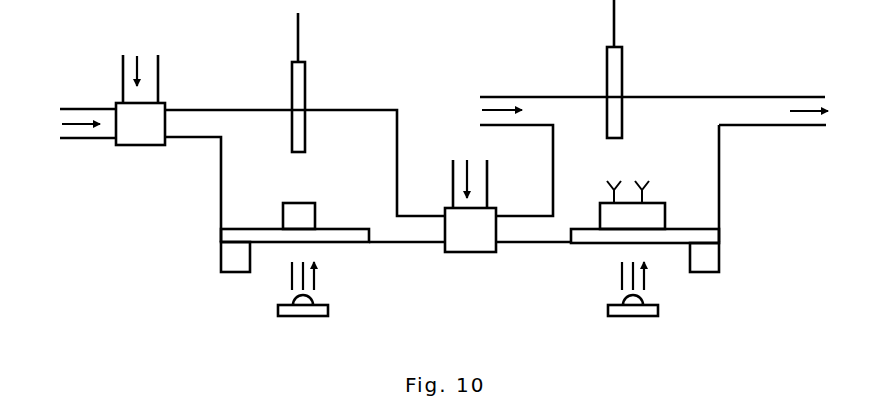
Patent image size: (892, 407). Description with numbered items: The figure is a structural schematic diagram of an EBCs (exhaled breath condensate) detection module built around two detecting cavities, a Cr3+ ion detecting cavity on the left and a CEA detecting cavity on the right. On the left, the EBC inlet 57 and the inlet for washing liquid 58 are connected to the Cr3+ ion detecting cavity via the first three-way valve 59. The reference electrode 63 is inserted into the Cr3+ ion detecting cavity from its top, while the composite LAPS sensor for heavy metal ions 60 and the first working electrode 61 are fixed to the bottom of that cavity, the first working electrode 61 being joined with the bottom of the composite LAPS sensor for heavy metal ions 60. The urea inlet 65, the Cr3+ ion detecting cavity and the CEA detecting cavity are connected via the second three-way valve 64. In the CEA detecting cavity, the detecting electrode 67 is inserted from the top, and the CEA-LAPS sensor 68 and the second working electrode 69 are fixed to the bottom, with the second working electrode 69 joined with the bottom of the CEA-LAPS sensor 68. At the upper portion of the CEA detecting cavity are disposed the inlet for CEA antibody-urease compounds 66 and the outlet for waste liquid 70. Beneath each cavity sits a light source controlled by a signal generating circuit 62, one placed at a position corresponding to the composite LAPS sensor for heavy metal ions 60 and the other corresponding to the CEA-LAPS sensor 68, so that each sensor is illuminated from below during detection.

The EBC inlet 57 is at (69, 123).
The inlet for washing liquid 58 is at (139, 65).
The first three-way valve 59 is at (140, 124).
The composite LAPS sensor for heavy metal ions 60 is at (298, 201).
The first working electrode 61 is at (270, 254).
The light source controlled by a signal generating circuit 62 is at (313, 320).
The reference electrode 63 is at (316, 82).
The second three-way valve 64 is at (470, 230).
The urea inlet 65 is at (452, 184).
The inlet for CEA antibody-urease compounds 66 is at (637, 156).
The detecting electrode 67 is at (631, 69).
The CEA-LAPS sensor 68 is at (632, 192).
The second working electrode 69 is at (645, 267).
The outlet for waste liquid 70 is at (792, 117).